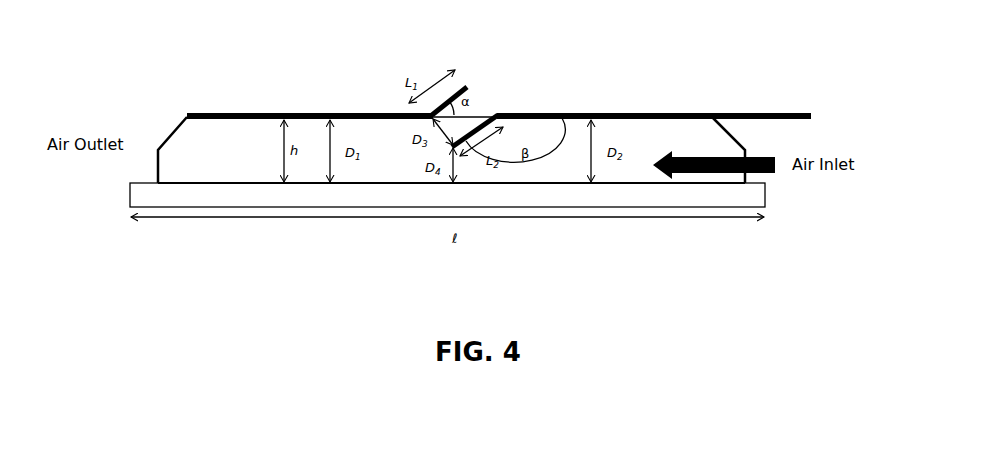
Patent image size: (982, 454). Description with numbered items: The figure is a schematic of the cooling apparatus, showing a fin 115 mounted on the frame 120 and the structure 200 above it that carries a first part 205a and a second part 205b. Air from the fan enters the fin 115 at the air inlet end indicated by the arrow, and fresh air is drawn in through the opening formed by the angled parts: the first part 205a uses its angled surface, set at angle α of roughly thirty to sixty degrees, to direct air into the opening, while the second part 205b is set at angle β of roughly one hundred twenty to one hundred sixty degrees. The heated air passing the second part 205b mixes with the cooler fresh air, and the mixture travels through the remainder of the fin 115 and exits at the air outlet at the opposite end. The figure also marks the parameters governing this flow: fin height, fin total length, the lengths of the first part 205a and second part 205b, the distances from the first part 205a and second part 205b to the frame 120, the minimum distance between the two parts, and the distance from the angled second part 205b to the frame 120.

The fin assembly 200 is at (400, 72).
The first part 205a is at (452, 100).
The second part 205b is at (540, 112).
The fin 115 is at (158, 166).
The frame 120 is at (277, 203).